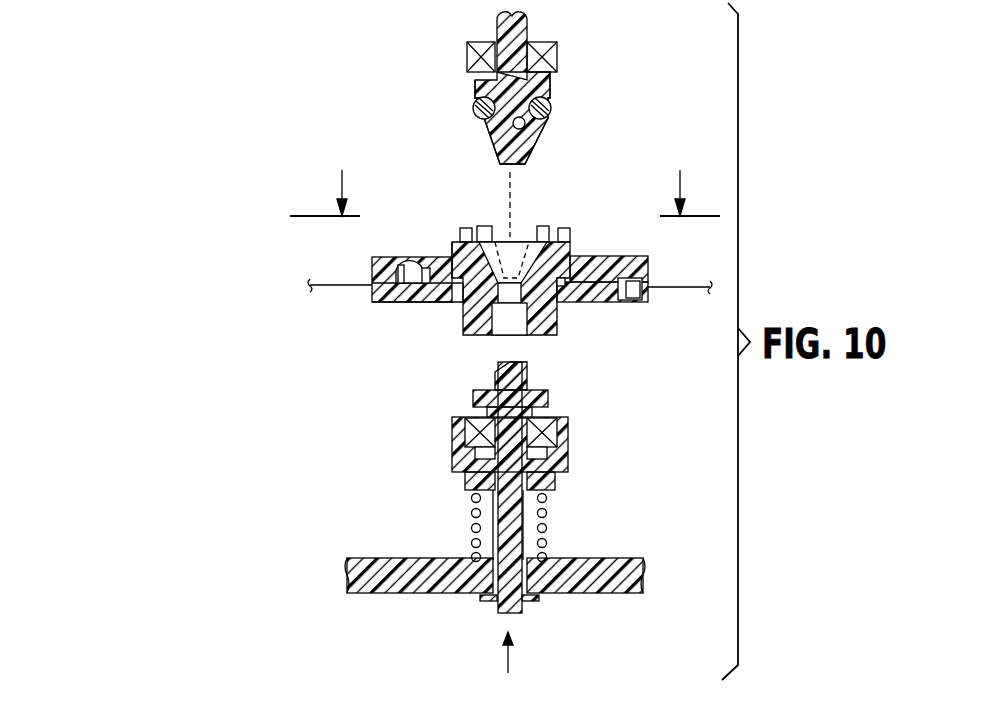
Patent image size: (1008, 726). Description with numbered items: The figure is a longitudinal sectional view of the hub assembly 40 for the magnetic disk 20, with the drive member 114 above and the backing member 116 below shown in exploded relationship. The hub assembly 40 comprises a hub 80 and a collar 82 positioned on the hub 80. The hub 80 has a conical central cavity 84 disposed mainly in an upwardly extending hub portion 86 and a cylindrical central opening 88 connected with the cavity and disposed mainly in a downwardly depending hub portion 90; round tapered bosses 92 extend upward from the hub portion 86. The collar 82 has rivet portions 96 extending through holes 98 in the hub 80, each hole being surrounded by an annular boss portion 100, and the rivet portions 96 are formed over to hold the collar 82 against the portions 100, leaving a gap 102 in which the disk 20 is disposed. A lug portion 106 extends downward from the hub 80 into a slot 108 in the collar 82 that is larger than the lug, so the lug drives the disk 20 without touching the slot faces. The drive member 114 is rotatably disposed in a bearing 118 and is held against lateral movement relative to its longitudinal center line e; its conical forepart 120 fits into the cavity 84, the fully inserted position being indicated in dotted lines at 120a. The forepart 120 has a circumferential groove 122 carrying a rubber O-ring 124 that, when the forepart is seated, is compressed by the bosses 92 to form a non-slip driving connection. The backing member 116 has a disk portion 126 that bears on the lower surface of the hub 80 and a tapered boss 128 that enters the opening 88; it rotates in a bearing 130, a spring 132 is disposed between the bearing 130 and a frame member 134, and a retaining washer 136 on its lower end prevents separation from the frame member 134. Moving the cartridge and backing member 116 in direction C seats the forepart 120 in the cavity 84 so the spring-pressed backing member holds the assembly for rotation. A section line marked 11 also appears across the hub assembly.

The drive member 114 is at (549, 36).
The bearing 118 is at (541, 56).
The conical forepart 120 is at (489, 118).
The dotted line position of forepart 120a is at (500, 256).
The circumferential groove 122 is at (524, 126).
The O-ring 124 is at (550, 108).
The hub assembly 40 is at (510, 266).
The hub 80 is at (609, 247).
The collar 82 is at (634, 317).
The conical central cavity 84 is at (516, 242).
The upwardly extending hub portion 86 is at (454, 258).
The cylindrical central opening 88 is at (506, 333).
The downwardly depending hub portion 90 is at (496, 282).
The round tapered bosses 92 is at (470, 238).
The rivet portions 96 is at (414, 263).
The holes 98 is at (425, 290).
The annular boss portion 100 is at (399, 263).
The gap 102 is at (385, 275).
The lug portion 106 is at (641, 299).
The slot 108 is at (621, 300).
The section line 11- 11 is at (704, 260).
The disk 20 is at (510, 257).
The disk portion 126 is at (542, 401).
The tapered boss 128 is at (536, 369).
The bearing 130 is at (478, 418).
The spring 132 is at (537, 517).
The frame member 134 is at (495, 545).
The retaining washer 136 is at (495, 623).
The backing member 116 is at (522, 605).
The longitudinal center line e is at (522, 188).
The direction C is at (514, 655).